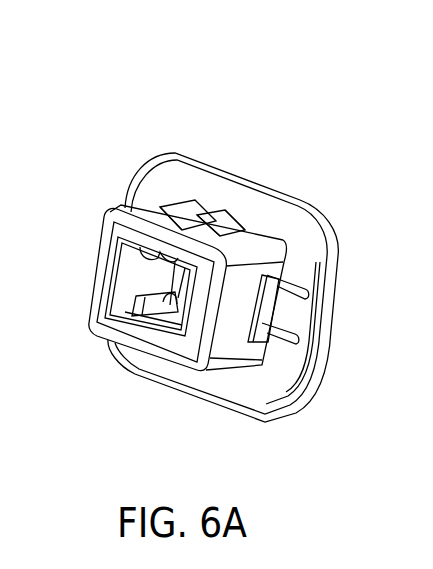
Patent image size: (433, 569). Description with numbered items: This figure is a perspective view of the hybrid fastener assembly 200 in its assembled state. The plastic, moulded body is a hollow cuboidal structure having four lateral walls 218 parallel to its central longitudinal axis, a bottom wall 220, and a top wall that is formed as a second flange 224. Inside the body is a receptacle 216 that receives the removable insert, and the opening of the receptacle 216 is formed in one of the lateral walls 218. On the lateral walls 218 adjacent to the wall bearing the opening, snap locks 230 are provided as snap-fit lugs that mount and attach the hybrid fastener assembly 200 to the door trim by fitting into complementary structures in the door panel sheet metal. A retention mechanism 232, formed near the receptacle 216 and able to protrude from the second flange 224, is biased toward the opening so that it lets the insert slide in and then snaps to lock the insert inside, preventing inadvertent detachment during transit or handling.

The hybrid fastener assembly 200 is at (292, 108).
The receptacle 216 is at (170, 307).
The lateral walls 218 is at (230, 340).
The bottom wall 220 is at (175, 350).
The second flange 224 is at (297, 220).
The snap locks 230 is at (197, 222).
The retention mechanism 232 is at (287, 313).